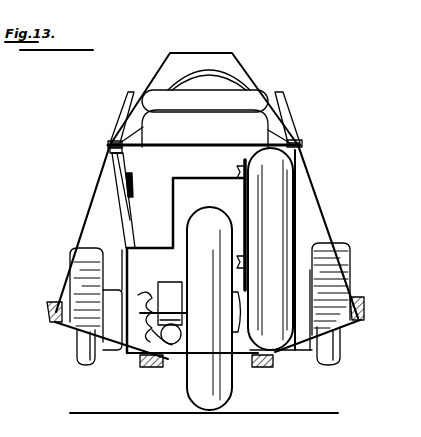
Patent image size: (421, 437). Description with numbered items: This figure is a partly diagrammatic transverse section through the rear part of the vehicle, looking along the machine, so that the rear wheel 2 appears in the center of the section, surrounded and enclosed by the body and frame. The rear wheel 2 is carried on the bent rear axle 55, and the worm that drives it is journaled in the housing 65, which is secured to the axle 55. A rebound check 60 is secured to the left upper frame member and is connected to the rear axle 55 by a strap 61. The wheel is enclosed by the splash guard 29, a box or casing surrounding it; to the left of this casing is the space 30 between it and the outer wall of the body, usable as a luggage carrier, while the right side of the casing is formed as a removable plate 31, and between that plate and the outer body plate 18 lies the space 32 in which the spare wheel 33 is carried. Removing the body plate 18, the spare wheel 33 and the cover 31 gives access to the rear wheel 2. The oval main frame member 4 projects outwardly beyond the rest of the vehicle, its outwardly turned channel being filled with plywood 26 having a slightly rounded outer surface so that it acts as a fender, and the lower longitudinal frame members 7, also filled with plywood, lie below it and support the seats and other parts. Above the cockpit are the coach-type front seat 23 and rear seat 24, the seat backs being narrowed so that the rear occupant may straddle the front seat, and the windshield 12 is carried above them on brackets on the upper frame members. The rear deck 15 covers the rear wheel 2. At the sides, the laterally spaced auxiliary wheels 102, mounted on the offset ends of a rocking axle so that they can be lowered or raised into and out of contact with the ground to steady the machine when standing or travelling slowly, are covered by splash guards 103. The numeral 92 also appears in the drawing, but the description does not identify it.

The rear wheel 2 is at (214, 308).
The main frame member 4 is at (55, 301).
The longitudinal frame members 7 is at (131, 364).
The windshield 12 is at (232, 58).
The rear deck 15 is at (177, 144).
The rear body plate 18 is at (318, 184).
The front seat 23 is at (205, 91).
The rear seat 24 is at (205, 128).
The plywood filling 26 is at (157, 369).
The splash guard 29 is at (204, 177).
The luggage space 30 is at (101, 204).
The removable plate 31 is at (243, 192).
The spare wheel space 32 is at (310, 228).
The spare wheel 33 is at (270, 249).
The rear axle 55 is at (142, 306).
The rebound check 60 is at (119, 163).
The strap 61 is at (130, 216).
The worm housing 65 is at (168, 283).
The motor 92 is at (413, 283).
The auxiliary wheels 102 is at (80, 348).
The splash guards 103 is at (86, 254).